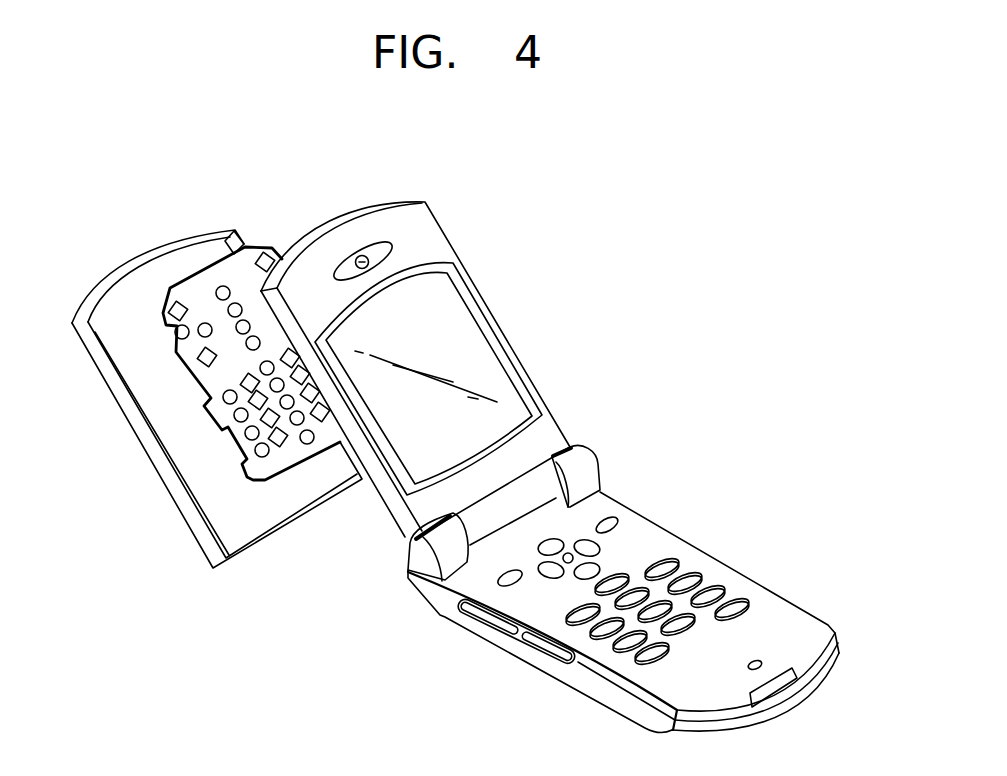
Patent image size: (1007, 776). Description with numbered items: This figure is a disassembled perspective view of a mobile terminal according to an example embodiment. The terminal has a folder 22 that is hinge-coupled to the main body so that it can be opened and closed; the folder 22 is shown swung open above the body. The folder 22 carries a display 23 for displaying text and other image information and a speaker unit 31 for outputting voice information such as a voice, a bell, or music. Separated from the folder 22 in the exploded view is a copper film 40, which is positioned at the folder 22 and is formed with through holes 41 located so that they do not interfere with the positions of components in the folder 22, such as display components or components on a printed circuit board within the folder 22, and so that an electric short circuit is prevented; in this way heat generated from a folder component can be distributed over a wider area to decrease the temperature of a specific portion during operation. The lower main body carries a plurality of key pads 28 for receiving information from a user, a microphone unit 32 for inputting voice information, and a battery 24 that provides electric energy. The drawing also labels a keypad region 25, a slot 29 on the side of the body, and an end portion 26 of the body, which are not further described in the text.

The folder 22 is at (432, 360).
The display 23 is at (473, 345).
The speaker unit 31 is at (368, 262).
The copper film 40 is at (251, 432).
The through holes 41 is at (264, 453).
The battery 24 is at (660, 598).
The keypad 25 is at (645, 565).
The key pads 28 is at (667, 565).
The side slot 29 is at (480, 613).
The microphone unit 32 is at (760, 661).
The end portion of main body 26 is at (837, 640).